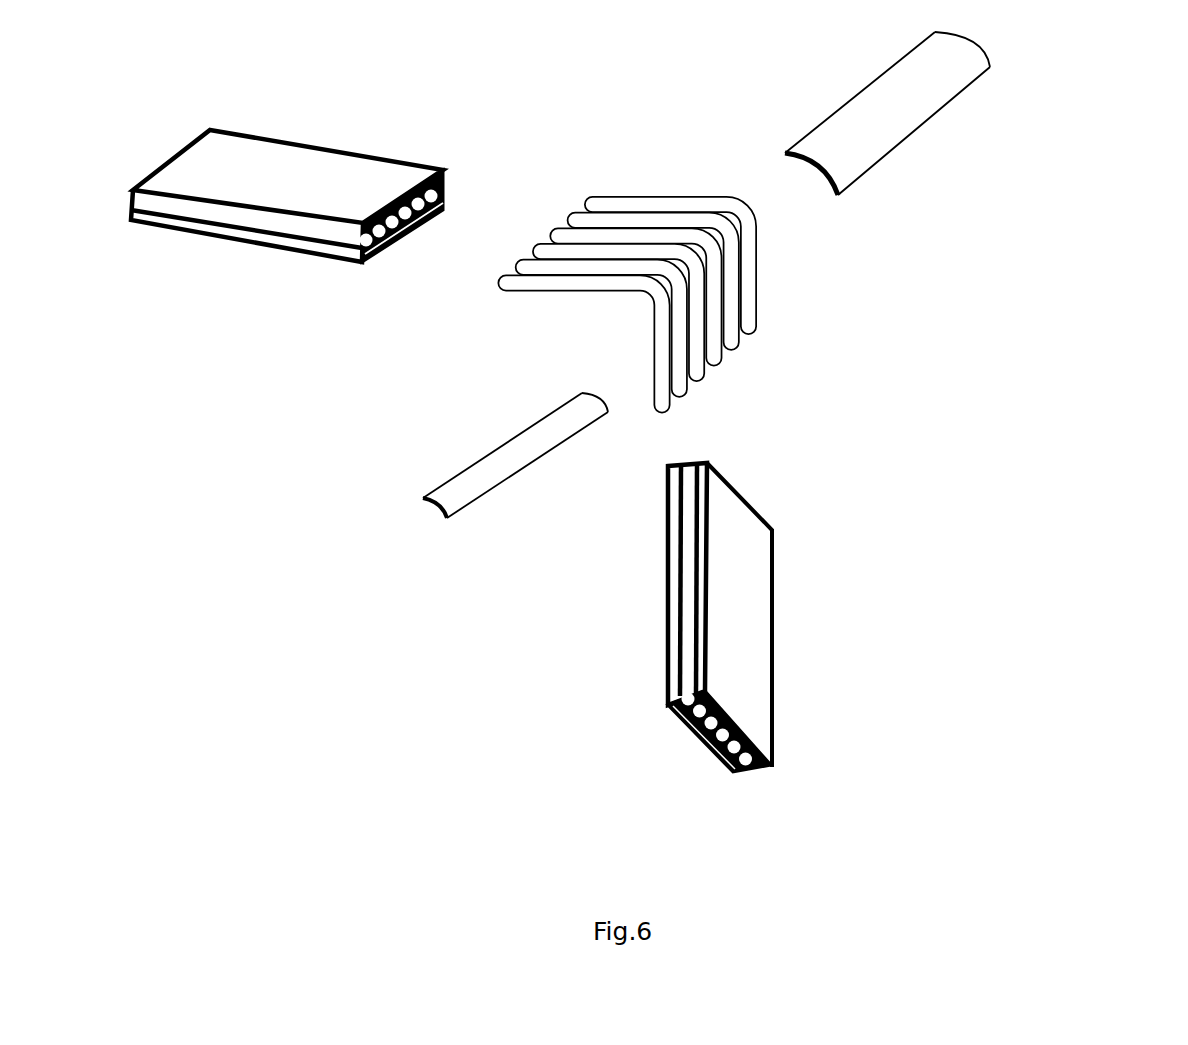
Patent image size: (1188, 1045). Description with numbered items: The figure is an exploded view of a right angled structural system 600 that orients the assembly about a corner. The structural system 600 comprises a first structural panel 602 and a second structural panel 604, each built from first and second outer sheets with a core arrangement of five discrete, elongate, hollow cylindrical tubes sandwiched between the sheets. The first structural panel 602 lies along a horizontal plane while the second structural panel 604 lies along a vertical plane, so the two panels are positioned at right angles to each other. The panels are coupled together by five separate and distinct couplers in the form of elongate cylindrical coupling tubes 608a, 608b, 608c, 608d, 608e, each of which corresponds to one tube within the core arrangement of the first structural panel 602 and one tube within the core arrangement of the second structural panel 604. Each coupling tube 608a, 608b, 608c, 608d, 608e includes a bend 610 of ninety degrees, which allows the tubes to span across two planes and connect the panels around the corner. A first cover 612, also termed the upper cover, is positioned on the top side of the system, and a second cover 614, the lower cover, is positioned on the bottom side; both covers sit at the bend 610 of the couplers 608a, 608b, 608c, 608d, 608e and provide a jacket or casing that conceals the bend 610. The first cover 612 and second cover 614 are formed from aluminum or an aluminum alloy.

The structural system 600 is at (1045, 244).
The first structural panel 602 is at (218, 213).
The second structural panel 604 is at (678, 700).
The coupling tube 608a is at (507, 292).
The coupling tube 608b is at (528, 274).
The coupling tube 608c is at (718, 363).
The coupling tube 608d is at (733, 311).
The coupling tube 608e is at (623, 203).
The bend 610 is at (630, 312).
The first cover 612 is at (828, 130).
The second cover 614 is at (498, 477).